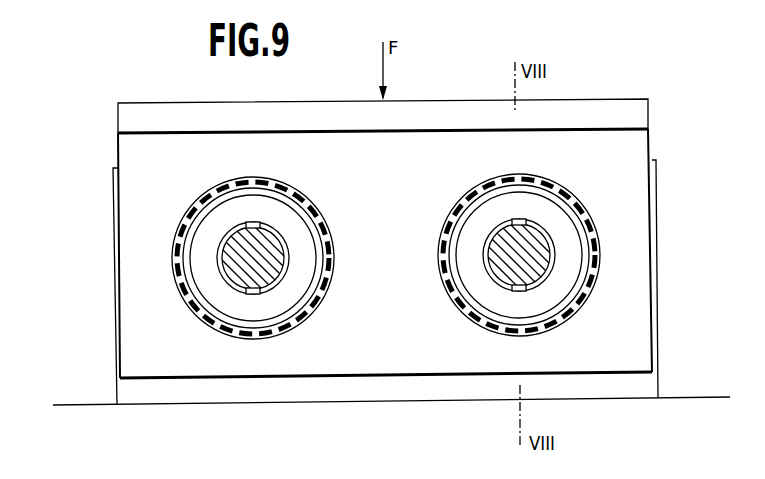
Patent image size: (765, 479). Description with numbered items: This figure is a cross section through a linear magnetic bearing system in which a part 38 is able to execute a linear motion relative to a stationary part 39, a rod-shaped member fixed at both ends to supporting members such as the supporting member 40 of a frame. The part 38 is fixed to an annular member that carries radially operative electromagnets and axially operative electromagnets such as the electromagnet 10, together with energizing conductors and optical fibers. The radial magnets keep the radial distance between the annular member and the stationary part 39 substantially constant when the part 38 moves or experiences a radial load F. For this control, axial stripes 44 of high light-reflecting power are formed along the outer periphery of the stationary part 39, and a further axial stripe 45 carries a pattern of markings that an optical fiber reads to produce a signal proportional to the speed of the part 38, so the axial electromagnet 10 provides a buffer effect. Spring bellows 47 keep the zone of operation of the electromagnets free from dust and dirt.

The electromagnet 10 is at (198, 289).
The part 38 is at (140, 118).
The stationary part 39 is at (228, 256).
The supporting member 40 is at (116, 308).
The axial stripes 44 is at (252, 226).
The axial stripe 45 is at (250, 292).
The spring bellows 47 is at (308, 203).